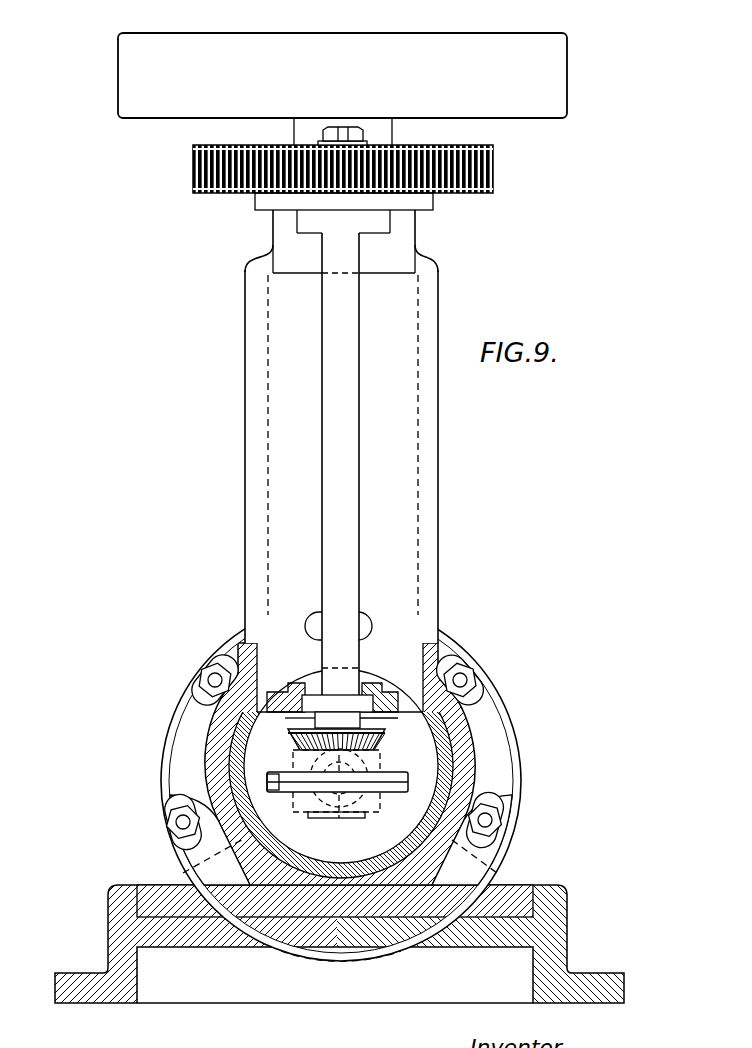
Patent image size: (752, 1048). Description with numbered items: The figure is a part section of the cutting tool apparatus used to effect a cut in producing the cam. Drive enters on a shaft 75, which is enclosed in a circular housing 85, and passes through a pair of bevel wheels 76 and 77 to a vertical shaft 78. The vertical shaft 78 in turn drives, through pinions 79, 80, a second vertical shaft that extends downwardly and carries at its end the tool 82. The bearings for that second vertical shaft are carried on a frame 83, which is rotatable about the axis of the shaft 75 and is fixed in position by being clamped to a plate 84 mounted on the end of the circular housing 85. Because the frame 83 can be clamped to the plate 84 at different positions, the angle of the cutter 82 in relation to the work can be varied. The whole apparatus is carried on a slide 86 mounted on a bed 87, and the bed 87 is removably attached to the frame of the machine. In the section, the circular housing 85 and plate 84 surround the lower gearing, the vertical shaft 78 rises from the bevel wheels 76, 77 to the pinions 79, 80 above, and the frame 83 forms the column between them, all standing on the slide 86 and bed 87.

The shaft 75 is at (337, 782).
The bevel wheel 76 is at (348, 824).
The bevel wheel 77 is at (377, 746).
The vertical shaft 78 is at (343, 457).
The pinion 79 is at (365, 158).
The pinion 80 is at (477, 163).
The tool 82 is at (285, 785).
The frame 83 is at (246, 483).
The plate 84 is at (490, 728).
The circular housing 85 is at (208, 757).
The slide 86 is at (247, 910).
The bed 87 is at (405, 930).